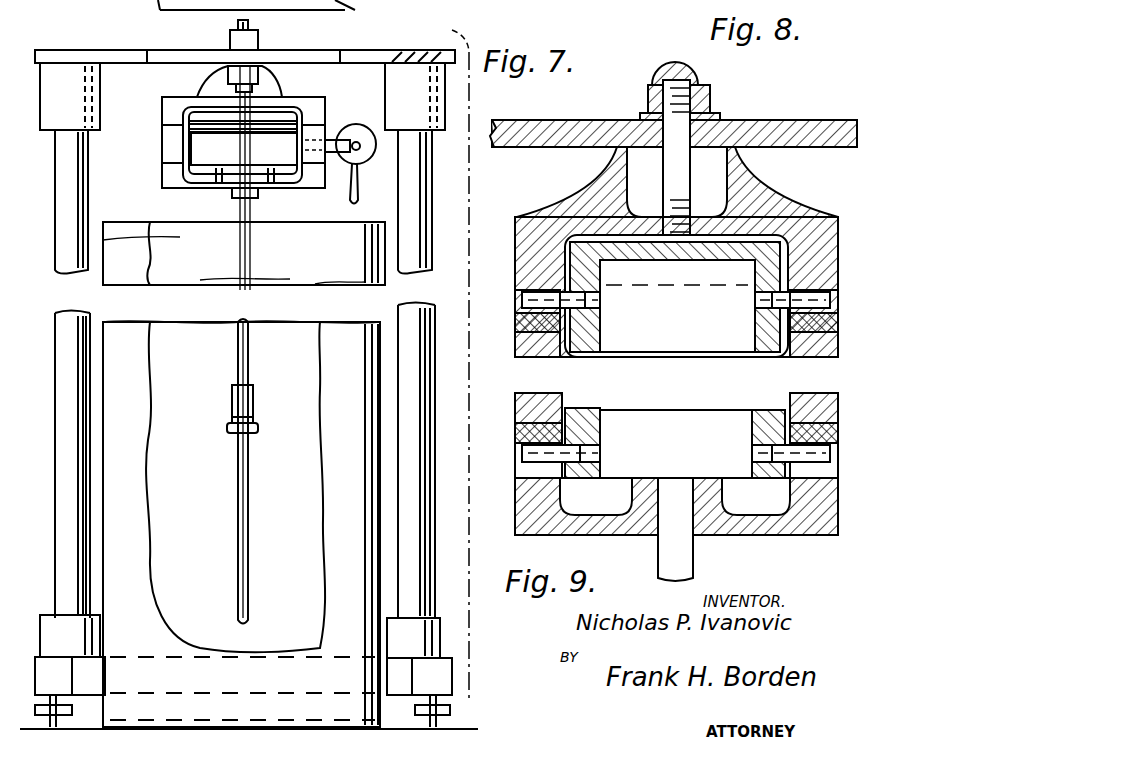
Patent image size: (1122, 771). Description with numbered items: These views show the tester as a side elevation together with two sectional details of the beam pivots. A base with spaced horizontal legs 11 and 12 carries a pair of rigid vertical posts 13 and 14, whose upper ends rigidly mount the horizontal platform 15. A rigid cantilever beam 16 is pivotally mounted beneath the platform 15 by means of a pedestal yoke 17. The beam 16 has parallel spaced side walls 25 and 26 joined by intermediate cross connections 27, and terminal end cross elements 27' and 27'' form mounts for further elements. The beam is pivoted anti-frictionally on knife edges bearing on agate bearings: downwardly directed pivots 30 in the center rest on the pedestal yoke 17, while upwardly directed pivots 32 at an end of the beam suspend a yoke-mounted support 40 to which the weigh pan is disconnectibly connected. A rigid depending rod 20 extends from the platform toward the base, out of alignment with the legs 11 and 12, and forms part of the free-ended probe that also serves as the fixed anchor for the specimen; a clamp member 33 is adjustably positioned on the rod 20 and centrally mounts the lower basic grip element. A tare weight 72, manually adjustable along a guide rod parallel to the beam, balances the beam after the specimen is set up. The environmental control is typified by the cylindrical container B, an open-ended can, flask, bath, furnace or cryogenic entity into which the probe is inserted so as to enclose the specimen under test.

In FIG. 7, the horizontal leg 11 is at (36, 672).
In FIG. 7, the horizontal leg 12 is at (186, 0).
In FIG. 7, the vertical post 13 is at (56, 186).
In FIG. 7, the vertical post 14 is at (422, 186).
In FIG. 7, the horizontal platform 15 is at (322, 52).
In FIG. 7, the beam 16 is at (214, 160).
In FIG. 8, the beam 16 is at (604, 338).
In FIG. 9, the beam 16 is at (722, 410).
In FIG. 8, the pedestal yoke 17 is at (740, 175).
In FIG. 7, the depending rod 20 is at (238, 515).
In FIG. 7, the side wall 25 is at (192, 153).
In FIG. 8, the side wall 25 is at (604, 328).
In FIG. 9, the side wall 25 is at (603, 410).
In FIG. 7, the side wall 26 is at (330, 183).
In FIG. 8, the side wall 26 is at (760, 345).
In FIG. 9, the side wall 26 is at (762, 410).
In FIG. 8, the cross connection 27 is at (677, 306).
In FIG. 7, the terminal end cross element 27' is at (207, 145).
In FIG. 9, the terminal end cross element 27'' is at (676, 444).
In FIG. 8, the downwardly directed pivot 30 is at (527, 295).
In FIG. 9, the upwardly directed pivot 32 is at (527, 470).
In FIG. 7, the clamp member 33 is at (255, 415).
In FIG. 9, the yoke-mounted support 40 is at (522, 526).
In FIG. 7, the tare weight 72 is at (358, 124).
In FIG. 7, the cylindrical container B is at (334, 548).